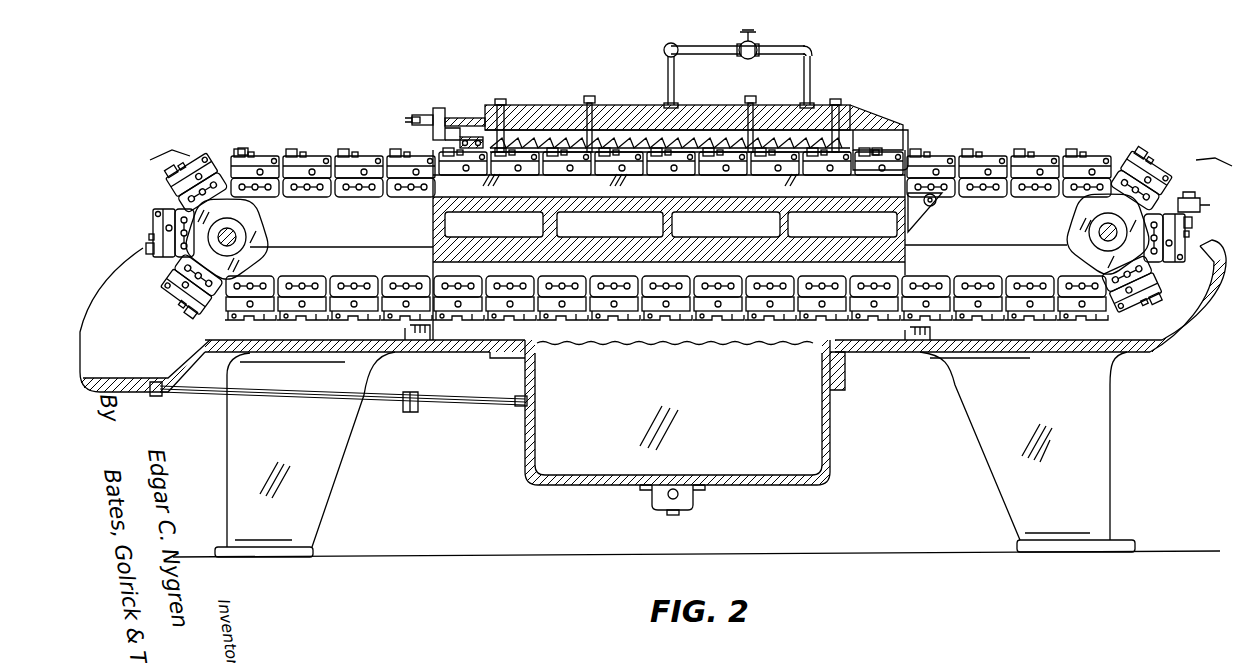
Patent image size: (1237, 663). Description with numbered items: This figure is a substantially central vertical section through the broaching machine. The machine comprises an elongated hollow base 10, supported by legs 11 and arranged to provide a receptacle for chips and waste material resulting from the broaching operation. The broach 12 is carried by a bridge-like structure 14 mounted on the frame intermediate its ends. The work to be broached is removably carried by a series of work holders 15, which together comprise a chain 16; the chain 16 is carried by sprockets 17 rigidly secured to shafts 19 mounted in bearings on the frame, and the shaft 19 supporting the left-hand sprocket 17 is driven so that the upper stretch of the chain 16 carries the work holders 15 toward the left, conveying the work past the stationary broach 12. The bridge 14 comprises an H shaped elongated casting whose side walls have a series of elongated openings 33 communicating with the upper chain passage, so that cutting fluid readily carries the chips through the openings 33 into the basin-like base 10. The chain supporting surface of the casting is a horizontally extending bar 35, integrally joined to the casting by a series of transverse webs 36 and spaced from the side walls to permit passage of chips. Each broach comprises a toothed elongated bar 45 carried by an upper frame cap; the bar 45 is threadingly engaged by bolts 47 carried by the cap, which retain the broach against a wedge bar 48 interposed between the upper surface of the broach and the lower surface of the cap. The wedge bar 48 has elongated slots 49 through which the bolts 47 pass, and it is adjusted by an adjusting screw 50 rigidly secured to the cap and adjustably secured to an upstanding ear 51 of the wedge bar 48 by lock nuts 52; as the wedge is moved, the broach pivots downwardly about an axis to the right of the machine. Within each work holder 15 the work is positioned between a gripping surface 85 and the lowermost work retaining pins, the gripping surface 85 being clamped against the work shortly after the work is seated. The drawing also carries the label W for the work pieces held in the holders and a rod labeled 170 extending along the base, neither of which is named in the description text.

The hollow base 10 is at (1152, 332).
The legs 11 is at (325, 482).
The broach 12 is at (845, 120).
The bridge-like structure 14 is at (870, 140).
The work holders 15 is at (322, 150).
The chain 16 is at (392, 196).
The sprockets 17 is at (270, 215).
The shafts 19 is at (236, 237).
The elongated openings 33 is at (512, 208).
The horizontally extending bar 35 is at (712, 206).
The transverse webs 36 is at (562, 214).
The elongated bar 45 is at (652, 104).
The bolts 47 is at (500, 104).
The wedge bar 48 is at (548, 132).
The elongated slots 49 is at (510, 108).
The adjusting screw 50 is at (458, 117).
The upstanding ear 51 is at (440, 106).
The lock nuts 52 is at (412, 117).
The gripping surface 85 is at (1196, 208).
The operating rod 170 is at (148, 388).
The work pieces W is at (245, 148).